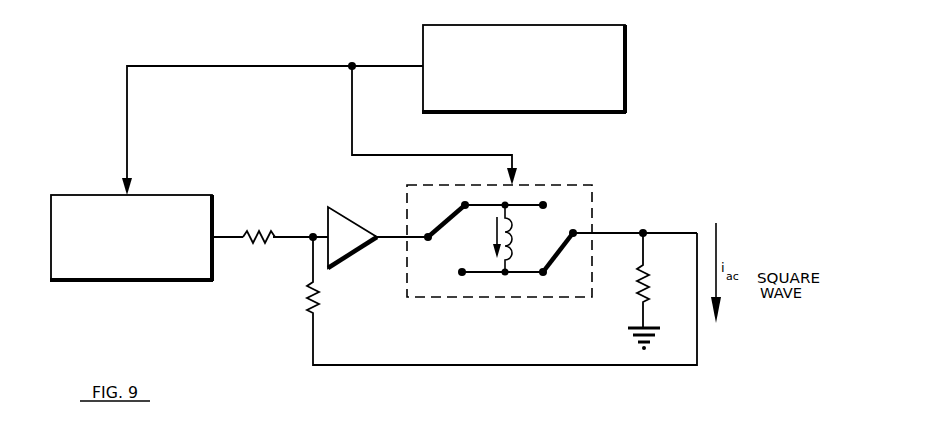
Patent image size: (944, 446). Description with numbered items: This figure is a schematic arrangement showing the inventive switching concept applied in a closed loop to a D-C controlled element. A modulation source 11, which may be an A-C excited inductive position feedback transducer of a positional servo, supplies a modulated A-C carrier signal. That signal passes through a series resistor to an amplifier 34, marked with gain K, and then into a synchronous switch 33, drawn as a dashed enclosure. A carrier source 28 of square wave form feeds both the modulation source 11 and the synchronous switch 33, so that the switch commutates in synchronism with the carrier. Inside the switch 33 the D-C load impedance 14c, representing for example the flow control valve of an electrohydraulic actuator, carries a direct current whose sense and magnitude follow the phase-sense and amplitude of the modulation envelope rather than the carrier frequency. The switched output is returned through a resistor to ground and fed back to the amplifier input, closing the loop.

The carrier source 28 is at (535, 45).
The modulation source 11 is at (167, 255).
The amplifier 34 is at (340, 245).
The synchronous switch 33 is at (576, 197).
The D-C load impedance 14c is at (510, 250).